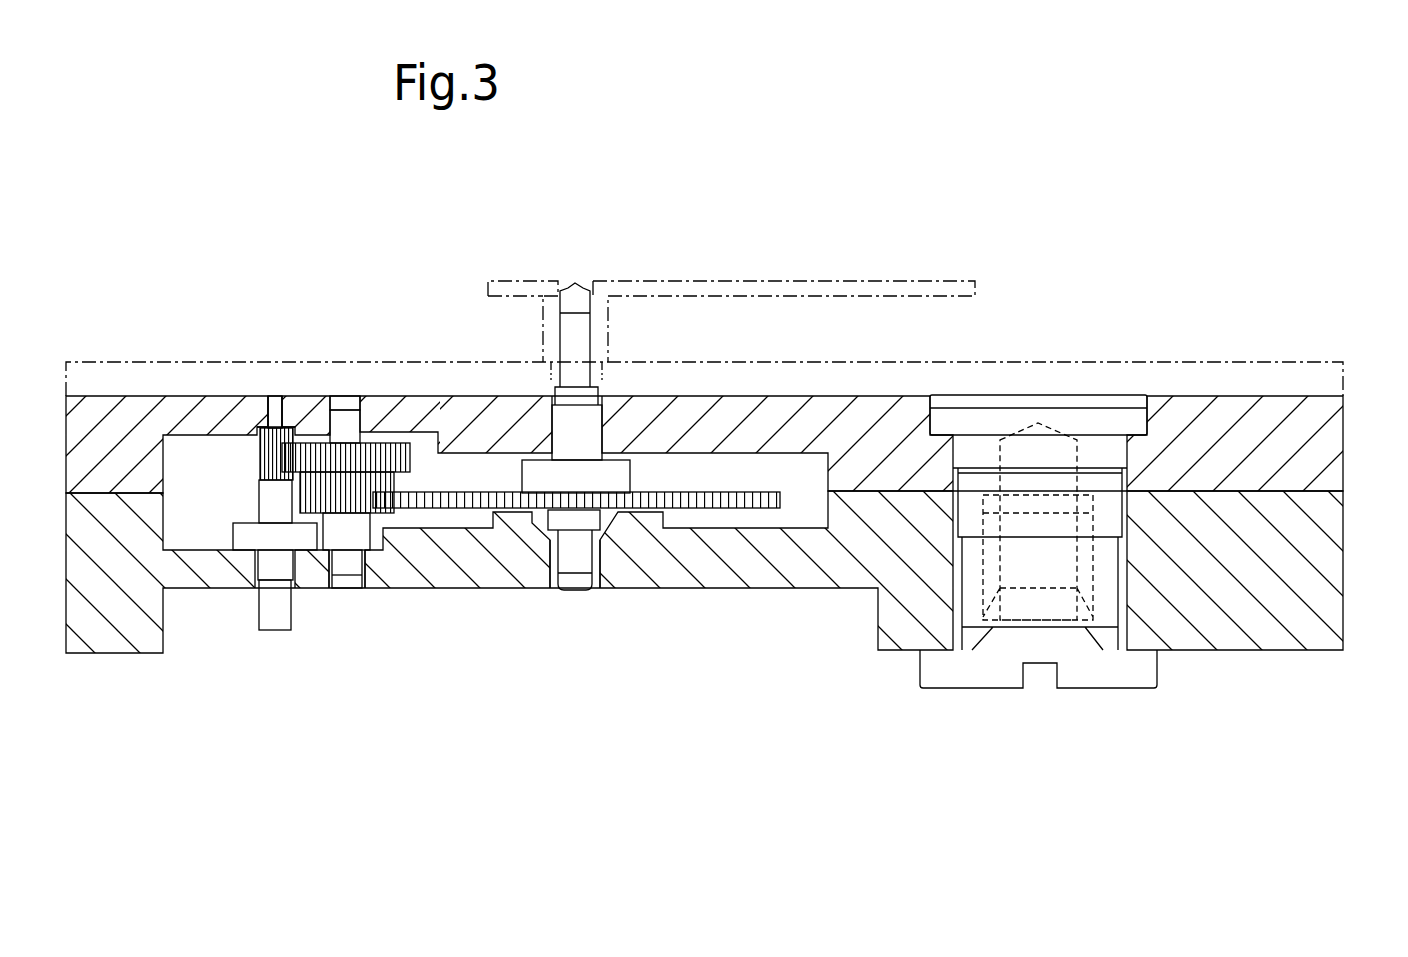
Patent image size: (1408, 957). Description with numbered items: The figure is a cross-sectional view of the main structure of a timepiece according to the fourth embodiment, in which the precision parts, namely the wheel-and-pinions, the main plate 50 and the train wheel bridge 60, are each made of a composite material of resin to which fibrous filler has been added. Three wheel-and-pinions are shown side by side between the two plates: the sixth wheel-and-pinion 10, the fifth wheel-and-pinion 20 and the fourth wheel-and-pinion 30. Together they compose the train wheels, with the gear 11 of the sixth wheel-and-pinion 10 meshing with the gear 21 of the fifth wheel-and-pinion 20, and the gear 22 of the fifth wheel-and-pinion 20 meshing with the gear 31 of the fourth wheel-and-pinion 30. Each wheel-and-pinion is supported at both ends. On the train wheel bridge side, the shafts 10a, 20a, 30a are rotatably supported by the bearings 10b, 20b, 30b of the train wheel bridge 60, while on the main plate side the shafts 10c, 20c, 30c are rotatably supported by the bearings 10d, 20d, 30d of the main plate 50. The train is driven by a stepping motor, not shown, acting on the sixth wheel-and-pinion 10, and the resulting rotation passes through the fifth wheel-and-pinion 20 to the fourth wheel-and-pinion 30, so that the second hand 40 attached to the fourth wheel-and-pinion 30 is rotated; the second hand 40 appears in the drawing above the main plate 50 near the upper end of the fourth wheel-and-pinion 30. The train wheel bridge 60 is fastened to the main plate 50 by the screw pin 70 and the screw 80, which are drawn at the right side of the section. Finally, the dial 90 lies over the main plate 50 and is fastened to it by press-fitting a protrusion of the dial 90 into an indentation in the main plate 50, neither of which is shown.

The sixth wheel-and-pinion 10 is at (233, 502).
The shaft of sixth wheel-and-pinion 10a is at (275, 620).
The bearing of train wheel bridge 10b is at (256, 566).
The shaft of sixth wheel-and-pinion 10c is at (274, 412).
The bearing of main plate 10d is at (262, 398).
The gear of sixth wheel-and-pinion 11 is at (258, 453).
The fifth wheel-and-pinion 20 is at (384, 471).
The shaft of fifth wheel-and-pinion 20a is at (347, 568).
The bearing of train wheel bridge 20b is at (388, 580).
The shaft of fifth wheel-and-pinion 20c is at (350, 415).
The bearing of main plate 20d is at (367, 428).
The gear of fifth wheel-and-pinion 21 is at (407, 450).
The gear of fifth wheel-and-pinion 22 is at (396, 481).
The fourth wheel-and-pinion 30 is at (577, 467).
The shaft of fourth wheel-and-pinion 30a is at (577, 562).
The bearing of train wheel bridge 30b is at (603, 572).
The shaft of fourth wheel-and-pinion 30c is at (565, 425).
The bearing of main plate 30d is at (607, 422).
The gear of fourth wheel-and-pinion 31 is at (762, 500).
The second hand 40 is at (751, 258).
The main plate 50 is at (1243, 412).
The train wheel bridge 60 is at (1215, 632).
The screw pin 70 is at (1103, 420).
The screw 80 is at (1125, 673).
The dial 90 is at (1330, 375).